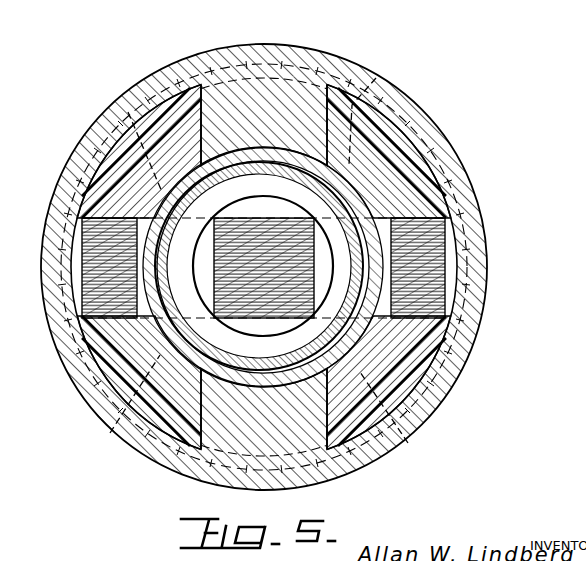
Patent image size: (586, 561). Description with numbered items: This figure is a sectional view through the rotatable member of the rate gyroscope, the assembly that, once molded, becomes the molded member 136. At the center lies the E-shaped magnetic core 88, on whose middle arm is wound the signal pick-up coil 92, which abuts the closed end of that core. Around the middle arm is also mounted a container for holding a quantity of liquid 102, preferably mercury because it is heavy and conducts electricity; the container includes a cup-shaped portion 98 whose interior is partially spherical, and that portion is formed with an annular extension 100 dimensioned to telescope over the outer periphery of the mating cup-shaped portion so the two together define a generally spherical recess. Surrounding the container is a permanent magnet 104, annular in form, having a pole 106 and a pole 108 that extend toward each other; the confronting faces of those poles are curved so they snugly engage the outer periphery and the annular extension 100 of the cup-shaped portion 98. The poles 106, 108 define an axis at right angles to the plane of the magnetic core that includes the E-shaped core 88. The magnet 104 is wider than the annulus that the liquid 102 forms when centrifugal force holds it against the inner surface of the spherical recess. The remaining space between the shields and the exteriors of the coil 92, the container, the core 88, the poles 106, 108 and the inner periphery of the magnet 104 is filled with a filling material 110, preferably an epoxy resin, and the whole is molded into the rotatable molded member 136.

The E-shaped magnetic core 88 is at (100, 226).
The signal pick-up coil 92 is at (128, 112).
The cup-shaped portion 98 is at (270, 153).
The annular extension 100 is at (300, 157).
The liquid 102 is at (238, 359).
The permanent magnet 104 is at (466, 174).
The pole 106 is at (331, 86).
The pole 108 is at (233, 385).
The filling material 110 is at (166, 100).
The molded member 136 is at (545, 316).